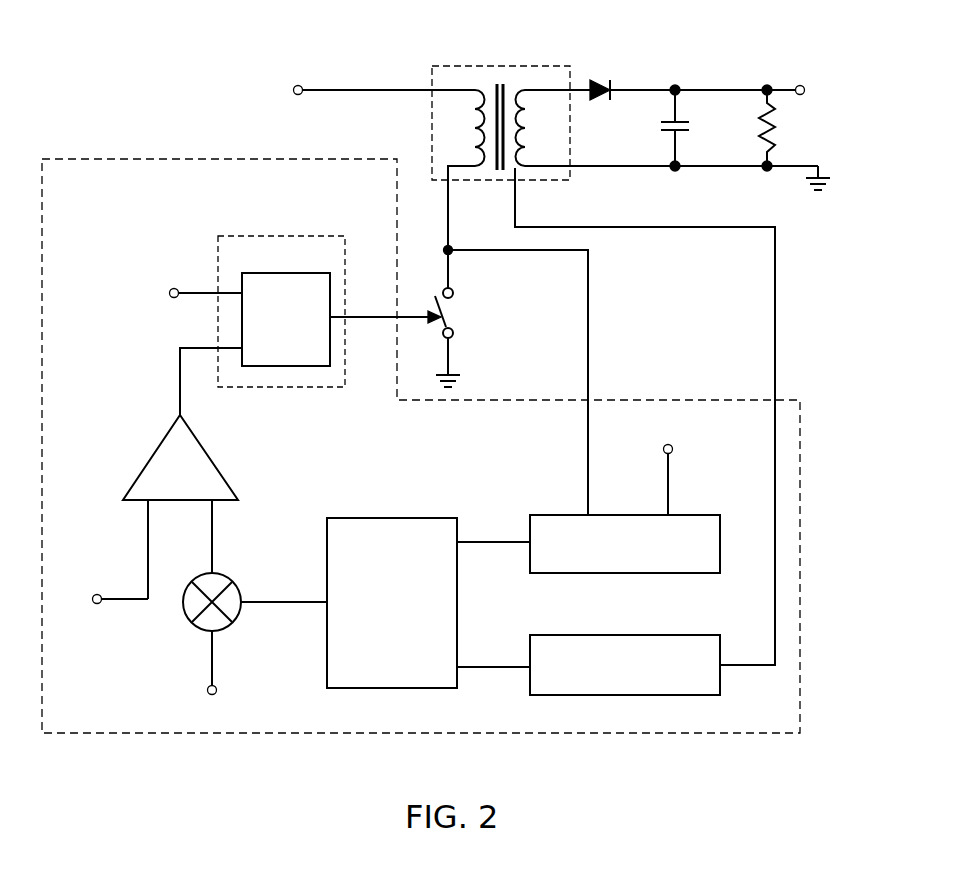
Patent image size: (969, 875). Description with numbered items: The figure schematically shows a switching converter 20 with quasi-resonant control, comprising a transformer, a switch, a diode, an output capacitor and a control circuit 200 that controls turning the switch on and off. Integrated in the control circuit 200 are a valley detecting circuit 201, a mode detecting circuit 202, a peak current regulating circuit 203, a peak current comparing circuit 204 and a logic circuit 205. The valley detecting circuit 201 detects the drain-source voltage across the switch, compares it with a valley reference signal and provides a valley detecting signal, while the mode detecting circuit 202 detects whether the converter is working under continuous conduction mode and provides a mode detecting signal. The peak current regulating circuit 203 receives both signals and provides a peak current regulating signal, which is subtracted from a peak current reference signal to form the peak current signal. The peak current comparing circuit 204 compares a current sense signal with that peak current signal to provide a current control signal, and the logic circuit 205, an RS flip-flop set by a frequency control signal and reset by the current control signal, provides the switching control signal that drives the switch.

The switching converter 20 is at (92, 77).
The control circuit 200 is at (800, 412).
The valley detecting circuit 201 is at (720, 553).
The mode detecting circuit 202 is at (652, 622).
The peak current regulating circuit 203 is at (372, 518).
The peak current comparing circuit 204 is at (213, 462).
The logic circuit 205 is at (280, 237).